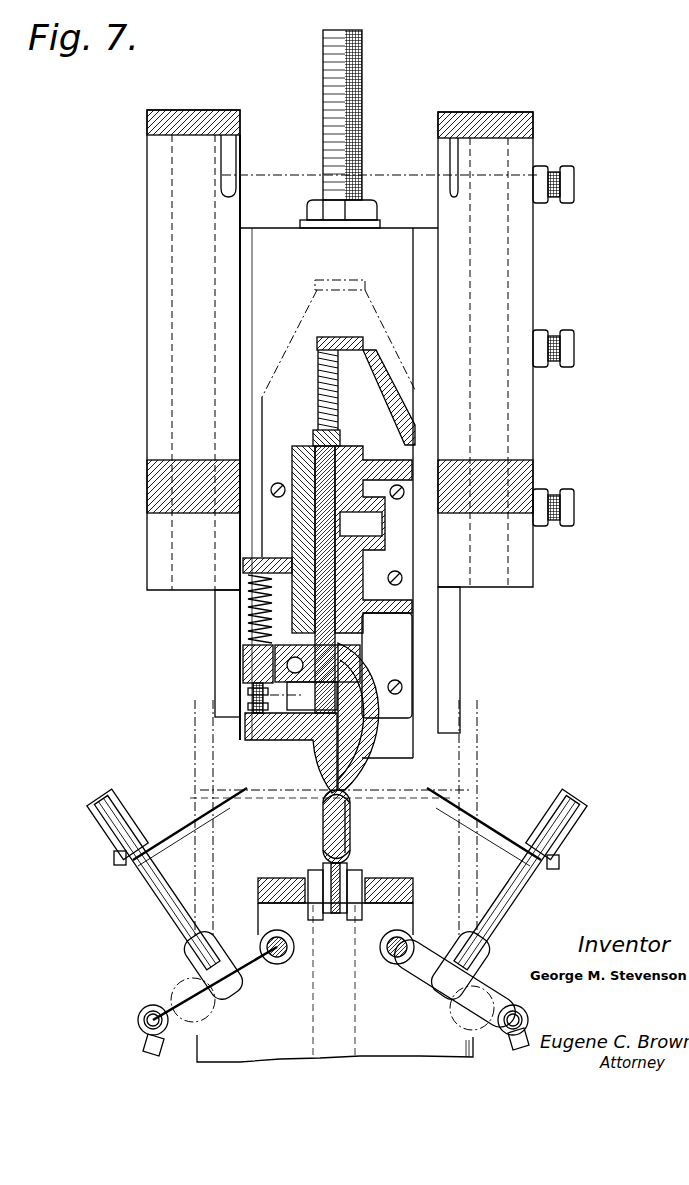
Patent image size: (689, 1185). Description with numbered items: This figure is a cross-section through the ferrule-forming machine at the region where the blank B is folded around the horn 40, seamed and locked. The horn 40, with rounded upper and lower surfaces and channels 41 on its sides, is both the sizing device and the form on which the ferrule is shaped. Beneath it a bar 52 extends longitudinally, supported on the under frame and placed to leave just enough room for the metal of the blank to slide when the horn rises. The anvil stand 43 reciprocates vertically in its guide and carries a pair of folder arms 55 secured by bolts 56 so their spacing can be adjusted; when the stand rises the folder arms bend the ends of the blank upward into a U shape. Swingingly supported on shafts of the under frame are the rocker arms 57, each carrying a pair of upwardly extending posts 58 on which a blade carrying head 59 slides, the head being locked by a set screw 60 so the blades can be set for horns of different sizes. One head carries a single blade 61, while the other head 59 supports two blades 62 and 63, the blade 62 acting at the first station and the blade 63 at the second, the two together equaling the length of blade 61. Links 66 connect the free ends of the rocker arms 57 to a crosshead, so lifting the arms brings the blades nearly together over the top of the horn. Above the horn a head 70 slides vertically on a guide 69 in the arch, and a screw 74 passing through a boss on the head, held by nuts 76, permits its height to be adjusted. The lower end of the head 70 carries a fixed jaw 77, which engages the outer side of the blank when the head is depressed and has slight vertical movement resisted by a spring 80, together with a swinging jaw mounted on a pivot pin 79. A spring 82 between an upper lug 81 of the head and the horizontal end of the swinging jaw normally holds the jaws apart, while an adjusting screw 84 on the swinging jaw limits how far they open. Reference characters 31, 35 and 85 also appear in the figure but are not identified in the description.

The pivot shaft 31 is at (277, 965).
The mandrel holder 35 is at (367, 877).
The horn 40 is at (323, 812).
The channels 41 is at (323, 826).
The blank B is at (348, 828).
The anvil stand 43 is at (413, 886).
The bar 52 is at (337, 912).
The folder arms 55 is at (292, 877).
The bolts 56 is at (243, 898).
The rocker arms 57 is at (246, 960).
The posts 58 is at (512, 907).
The blade carrying head 59 is at (113, 860).
The set screw 60 is at (567, 860).
The single blade 61 is at (200, 815).
The blade 62 is at (374, 778).
The blade 63 is at (433, 776).
The links 66 is at (134, 1048).
The guide 69 is at (490, 414).
The head 70 is at (377, 416).
The screw 74 is at (362, 97).
The nuts 76 is at (366, 198).
The fixed jaw 77 is at (328, 619).
The pivot pin 79 is at (380, 660).
The spring 80 is at (338, 394).
The upper lug 81 is at (240, 597).
The spring 82 is at (247, 630).
The adjusting screw 84 is at (253, 702).
The link 85 is at (148, 994).